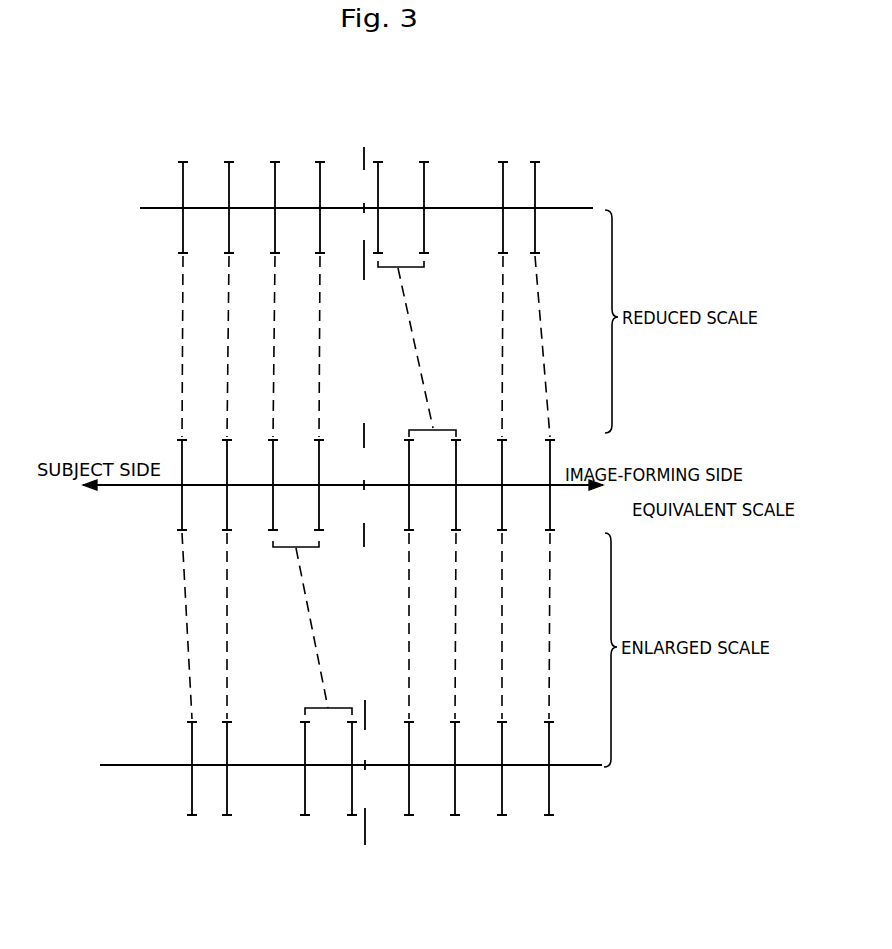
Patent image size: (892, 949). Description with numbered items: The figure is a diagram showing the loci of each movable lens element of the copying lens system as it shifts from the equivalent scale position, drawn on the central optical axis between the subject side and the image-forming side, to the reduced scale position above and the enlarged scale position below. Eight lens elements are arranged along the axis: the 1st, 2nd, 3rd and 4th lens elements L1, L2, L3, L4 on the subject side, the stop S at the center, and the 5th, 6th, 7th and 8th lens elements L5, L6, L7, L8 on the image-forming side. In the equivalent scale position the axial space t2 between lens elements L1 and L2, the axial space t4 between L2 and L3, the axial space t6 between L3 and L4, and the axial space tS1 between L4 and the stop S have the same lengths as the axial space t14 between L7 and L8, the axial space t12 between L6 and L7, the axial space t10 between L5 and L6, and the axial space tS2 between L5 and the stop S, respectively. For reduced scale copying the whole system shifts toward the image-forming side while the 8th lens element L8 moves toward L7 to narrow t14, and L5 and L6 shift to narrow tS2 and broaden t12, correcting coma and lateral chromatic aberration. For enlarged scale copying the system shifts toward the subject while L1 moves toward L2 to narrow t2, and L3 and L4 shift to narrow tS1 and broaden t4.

The 1st lens element L1 is at (176, 488).
The 2nd lens element L2 is at (217, 488).
The 3rd lens element L3 is at (279, 488).
The 4th lens element L4 is at (325, 488).
The 5th lens element L5 is at (403, 488).
The 6th lens element L6 is at (450, 488).
The 7th lens element L7 is at (502, 488).
The 8th lens element L8 is at (553, 488).
The stop S is at (364, 280).
The axial space between the 1st and 2nd lens elements t2 is at (204, 475).
The axial space between the 2nd and 3rd lens elements t4 is at (250, 475).
The axial space between the 3rd and 4th lens elements t6 is at (296, 475).
The axial space between the 4th lens element and the stop tS1 is at (341, 475).
The axial space between the 5th lens element and the stop tS2 is at (386, 475).
The axial space between the 5th and 6th lens elements t10 is at (432, 475).
The axial space between the 6th and 7th lens elements t12 is at (479, 475).
The axial space between the 7th and 8th lens elements t14 is at (526, 475).